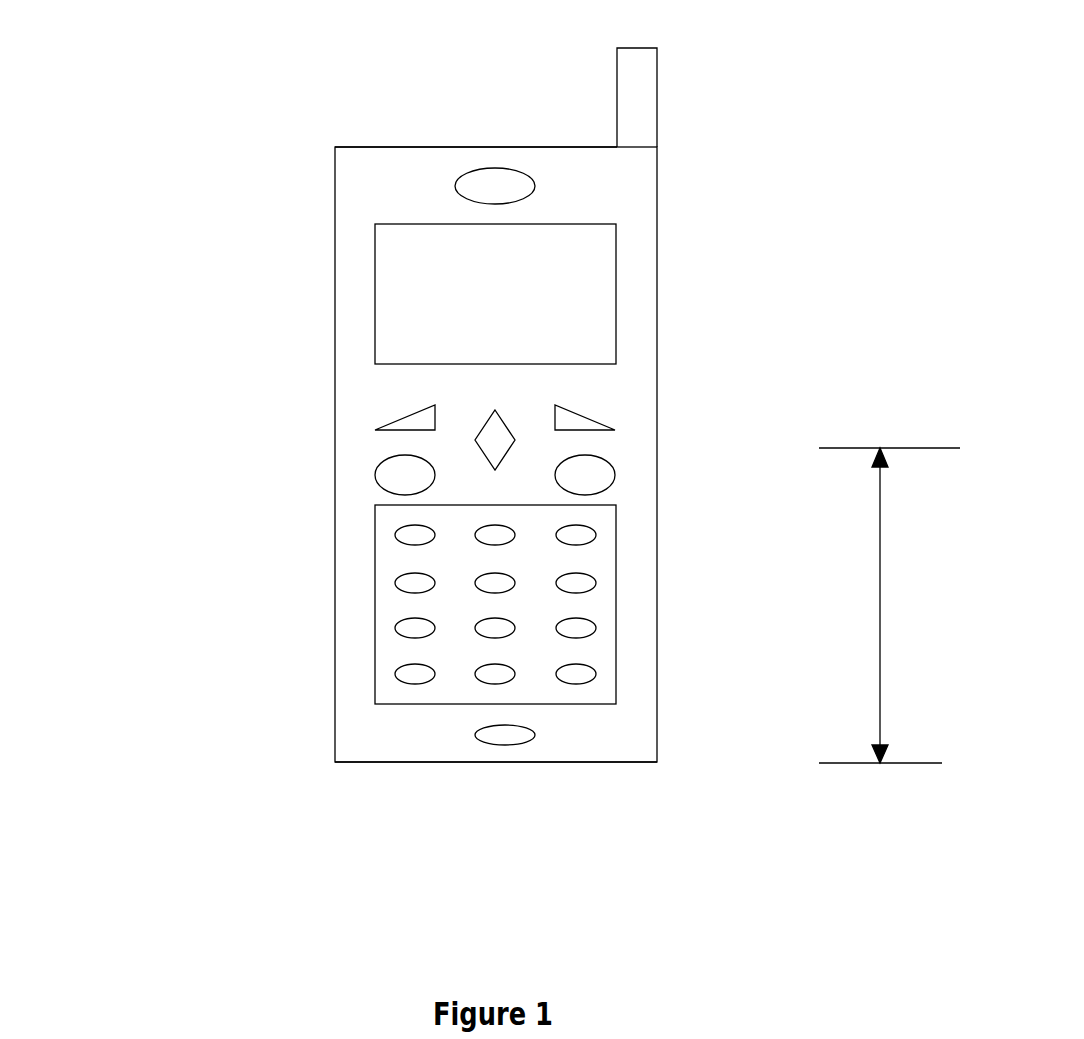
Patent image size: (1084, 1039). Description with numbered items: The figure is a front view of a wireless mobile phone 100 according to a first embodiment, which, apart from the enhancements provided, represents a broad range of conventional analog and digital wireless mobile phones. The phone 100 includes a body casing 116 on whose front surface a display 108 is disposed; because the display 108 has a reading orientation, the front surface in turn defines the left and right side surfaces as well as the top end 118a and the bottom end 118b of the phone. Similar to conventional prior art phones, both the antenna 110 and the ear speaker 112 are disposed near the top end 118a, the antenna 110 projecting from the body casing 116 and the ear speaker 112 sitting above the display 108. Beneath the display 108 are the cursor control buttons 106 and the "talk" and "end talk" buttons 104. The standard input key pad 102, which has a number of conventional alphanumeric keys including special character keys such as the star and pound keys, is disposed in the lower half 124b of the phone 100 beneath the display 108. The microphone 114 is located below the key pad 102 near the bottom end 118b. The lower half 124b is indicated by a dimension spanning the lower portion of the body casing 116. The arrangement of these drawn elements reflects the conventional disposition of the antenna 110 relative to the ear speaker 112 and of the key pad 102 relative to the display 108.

The phone 100 is at (90, 136).
The standard input key pad 102 is at (393, 565).
The "talk" and "end talk" buttons 104 is at (375, 470).
The cursor control buttons 106 is at (375, 428).
The display 108 is at (375, 226).
The antenna 110 is at (637, 72).
The ear speaker 112 is at (535, 187).
The microphone 114 is at (485, 727).
The body casing 116 is at (335, 348).
The top end 118a is at (375, 147).
The bottom end 118b is at (475, 762).
The lower half 124b is at (880, 624).